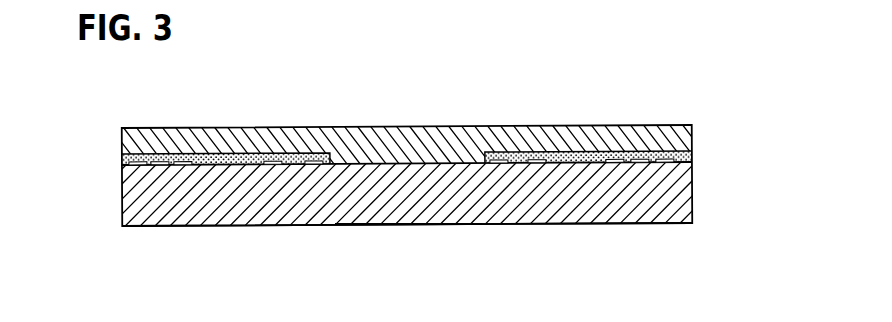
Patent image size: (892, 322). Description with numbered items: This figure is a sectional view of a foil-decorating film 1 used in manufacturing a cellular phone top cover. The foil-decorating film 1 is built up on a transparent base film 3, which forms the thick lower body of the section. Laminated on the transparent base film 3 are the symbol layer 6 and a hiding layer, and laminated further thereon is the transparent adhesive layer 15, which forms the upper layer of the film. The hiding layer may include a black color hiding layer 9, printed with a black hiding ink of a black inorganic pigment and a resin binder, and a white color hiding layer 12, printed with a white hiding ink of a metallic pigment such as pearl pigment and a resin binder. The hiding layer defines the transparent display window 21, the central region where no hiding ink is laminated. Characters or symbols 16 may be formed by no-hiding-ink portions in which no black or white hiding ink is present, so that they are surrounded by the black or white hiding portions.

The foil-decorating film 1 is at (174, 102).
The transparent base film 3 is at (688, 168).
The symbol layer 6 is at (138, 167).
The black color hiding layer 9 is at (273, 154).
The white color hiding layer 12 is at (124, 156).
The transparent adhesive layer 15 is at (693, 126).
The characters or symbols 16 is at (290, 167).
The transparent display window 21 is at (482, 262).